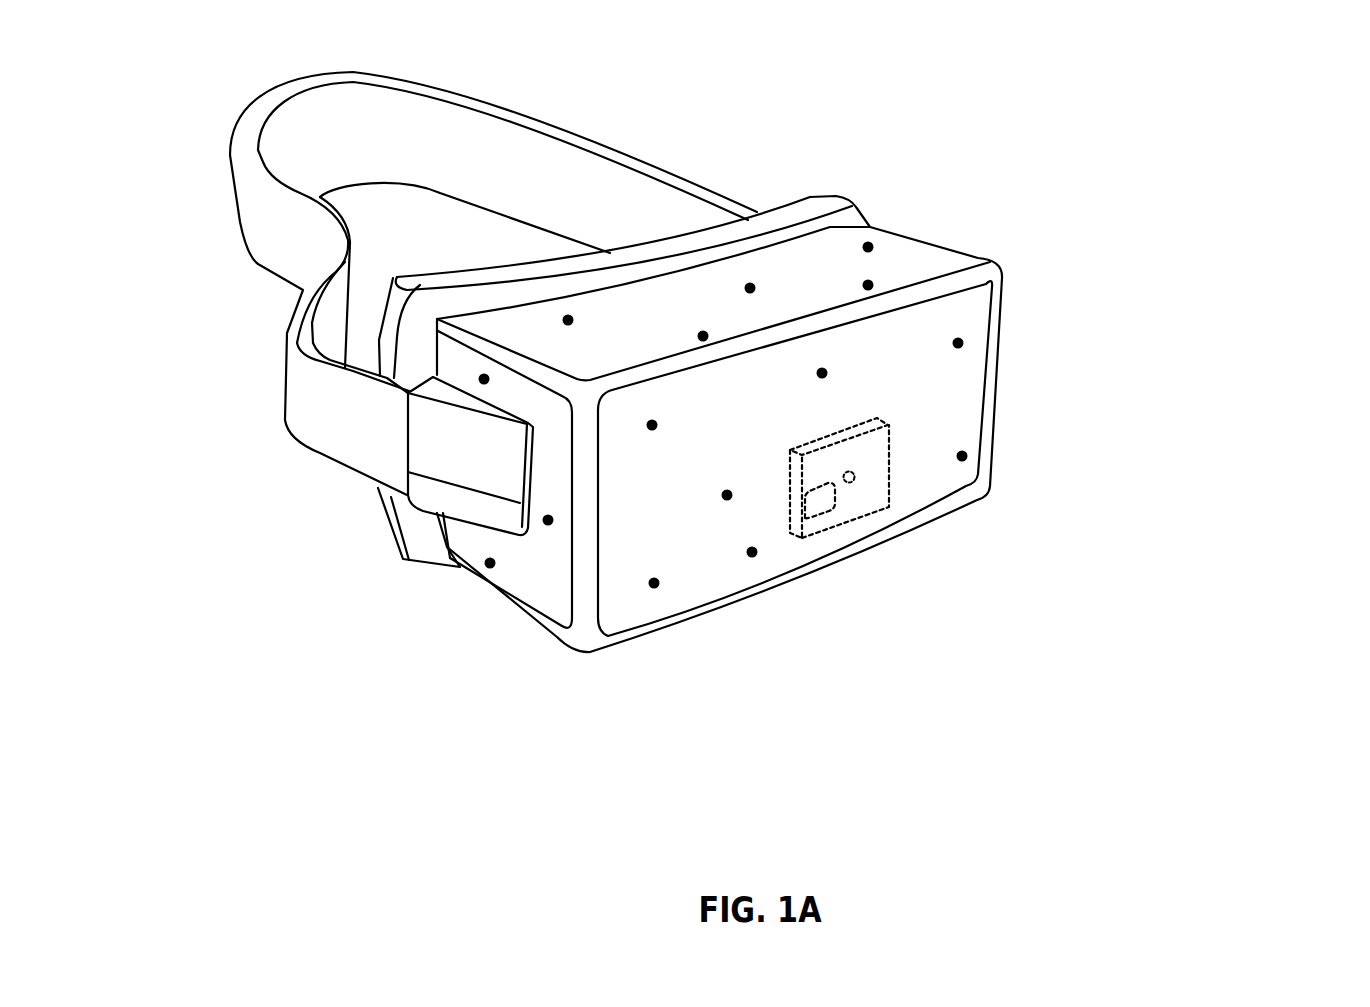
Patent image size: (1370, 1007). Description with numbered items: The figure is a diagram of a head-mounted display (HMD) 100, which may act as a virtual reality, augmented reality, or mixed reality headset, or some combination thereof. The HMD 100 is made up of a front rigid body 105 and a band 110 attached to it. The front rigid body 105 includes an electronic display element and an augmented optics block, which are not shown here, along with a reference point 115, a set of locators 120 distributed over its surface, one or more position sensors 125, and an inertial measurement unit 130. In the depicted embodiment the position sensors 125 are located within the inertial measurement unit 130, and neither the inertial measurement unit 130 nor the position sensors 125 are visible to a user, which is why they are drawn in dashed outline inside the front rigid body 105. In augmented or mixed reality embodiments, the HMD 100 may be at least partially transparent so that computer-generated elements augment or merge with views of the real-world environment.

The head-mounted display 100 is at (98, 105).
The front rigid body 105 is at (1004, 245).
The band 110 is at (624, 155).
The reference point 115 is at (852, 482).
The locators 120 is at (965, 457).
The position sensors 125 is at (820, 502).
The inertial measurement unit 130 is at (890, 478).